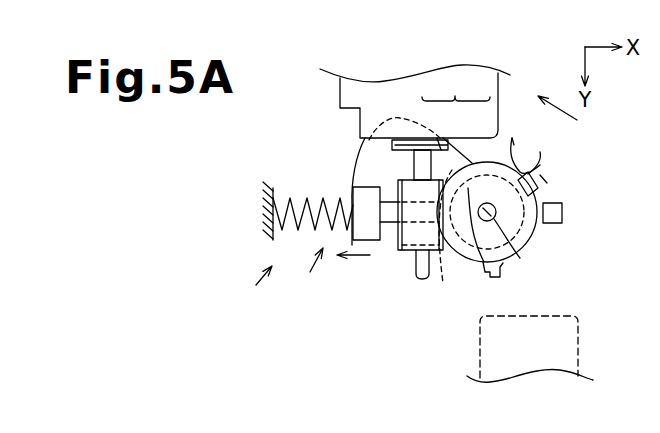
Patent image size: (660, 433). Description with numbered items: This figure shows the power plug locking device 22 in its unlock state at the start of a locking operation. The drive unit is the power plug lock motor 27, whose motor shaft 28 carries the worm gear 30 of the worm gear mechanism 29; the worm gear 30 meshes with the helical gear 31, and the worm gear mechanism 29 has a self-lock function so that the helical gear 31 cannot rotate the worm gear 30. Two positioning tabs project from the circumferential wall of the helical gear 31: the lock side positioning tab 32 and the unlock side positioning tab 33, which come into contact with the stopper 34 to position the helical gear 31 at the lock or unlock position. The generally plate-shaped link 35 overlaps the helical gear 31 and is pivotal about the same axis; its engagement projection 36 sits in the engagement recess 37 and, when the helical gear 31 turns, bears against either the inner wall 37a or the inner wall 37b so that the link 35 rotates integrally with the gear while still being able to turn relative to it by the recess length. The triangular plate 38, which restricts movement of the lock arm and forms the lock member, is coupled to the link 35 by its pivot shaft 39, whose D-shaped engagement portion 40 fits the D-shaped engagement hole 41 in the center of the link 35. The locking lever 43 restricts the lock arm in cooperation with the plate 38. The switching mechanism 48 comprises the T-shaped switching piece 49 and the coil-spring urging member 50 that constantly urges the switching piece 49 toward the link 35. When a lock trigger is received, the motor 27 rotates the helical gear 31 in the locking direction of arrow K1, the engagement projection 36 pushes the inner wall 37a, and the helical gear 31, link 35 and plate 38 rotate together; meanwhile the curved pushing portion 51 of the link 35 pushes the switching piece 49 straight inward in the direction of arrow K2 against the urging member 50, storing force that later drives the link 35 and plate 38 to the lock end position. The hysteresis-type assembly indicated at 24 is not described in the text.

The power plug locking device 22 is at (279, 70).
The hysteresis generating mechanism 24 is at (399, 188).
The power plug lock motor 27 is at (340, 105).
The motor shaft 28 is at (414, 163).
The worm gear mechanism 29 is at (456, 86).
The worm gear 30 is at (446, 150).
The helical gear 31 is at (480, 158).
The lock side positioning tab 32 is at (492, 278).
The unlock side positioning tab 33 is at (547, 191).
The stopper 34 is at (563, 214).
The link 35 is at (535, 236).
The engagement projection 36 is at (540, 172).
The engagement recess 37 is at (518, 168).
The inner wall 37a is at (547, 183).
The inner wall 37b is at (514, 162).
The plate 38 is at (350, 171).
The pivot shaft 39 is at (480, 262).
The engagement portion 40 is at (513, 260).
The engagement hole 41 is at (486, 208).
The locking lever 43 is at (580, 342).
The switching mechanism 48 is at (337, 241).
The switching piece 49 is at (392, 224).
The urging member 50 is at (285, 192).
The pushing portion 51 is at (431, 270).
The locking direction arrow K1 is at (554, 100).
The switching piece movement arrow K2 is at (357, 260).